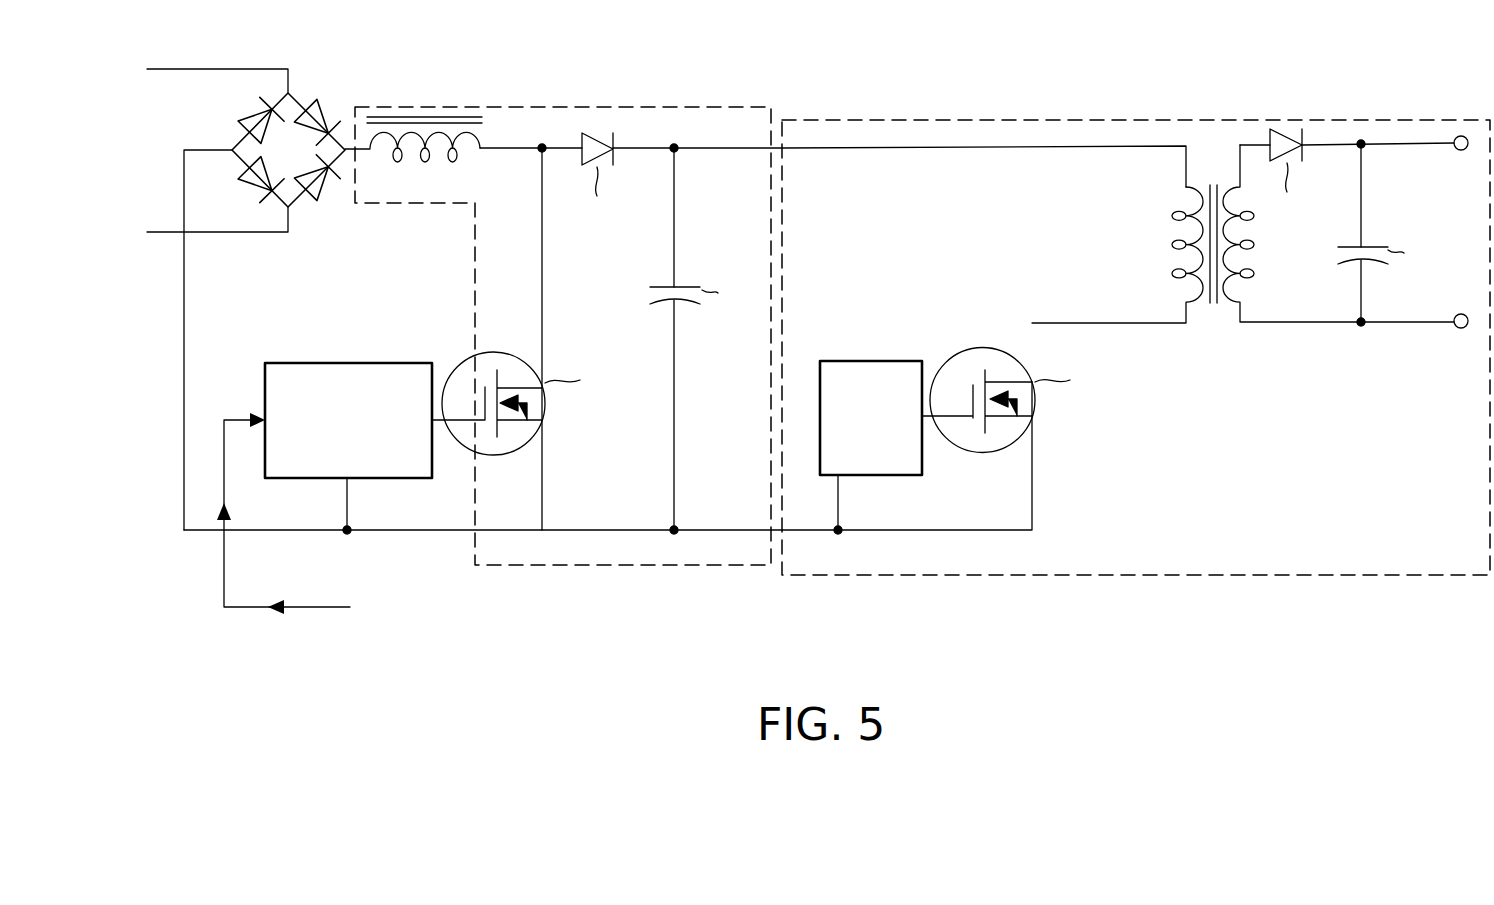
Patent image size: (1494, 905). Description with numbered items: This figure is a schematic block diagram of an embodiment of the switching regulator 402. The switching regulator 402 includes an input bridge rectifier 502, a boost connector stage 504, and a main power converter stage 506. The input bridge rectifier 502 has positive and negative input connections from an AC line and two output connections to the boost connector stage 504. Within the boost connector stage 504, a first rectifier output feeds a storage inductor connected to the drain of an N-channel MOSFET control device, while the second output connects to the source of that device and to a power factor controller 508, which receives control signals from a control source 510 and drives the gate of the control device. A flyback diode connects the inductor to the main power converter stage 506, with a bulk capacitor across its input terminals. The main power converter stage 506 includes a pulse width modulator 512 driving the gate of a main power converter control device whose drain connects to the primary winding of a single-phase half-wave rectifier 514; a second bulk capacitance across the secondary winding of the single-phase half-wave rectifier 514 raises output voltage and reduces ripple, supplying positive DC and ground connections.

The switching regulator 402 is at (1293, 614).
The input bridge rectifier 502 is at (320, 105).
The boost connector stage 504 is at (590, 106).
The main power converter stage 506 is at (903, 120).
The power factor controller 508 is at (348, 446).
The control source 510 is at (330, 513).
The pulse width modulator 512 is at (871, 445).
The single-phase half-wave rectifier 514 is at (1216, 305).